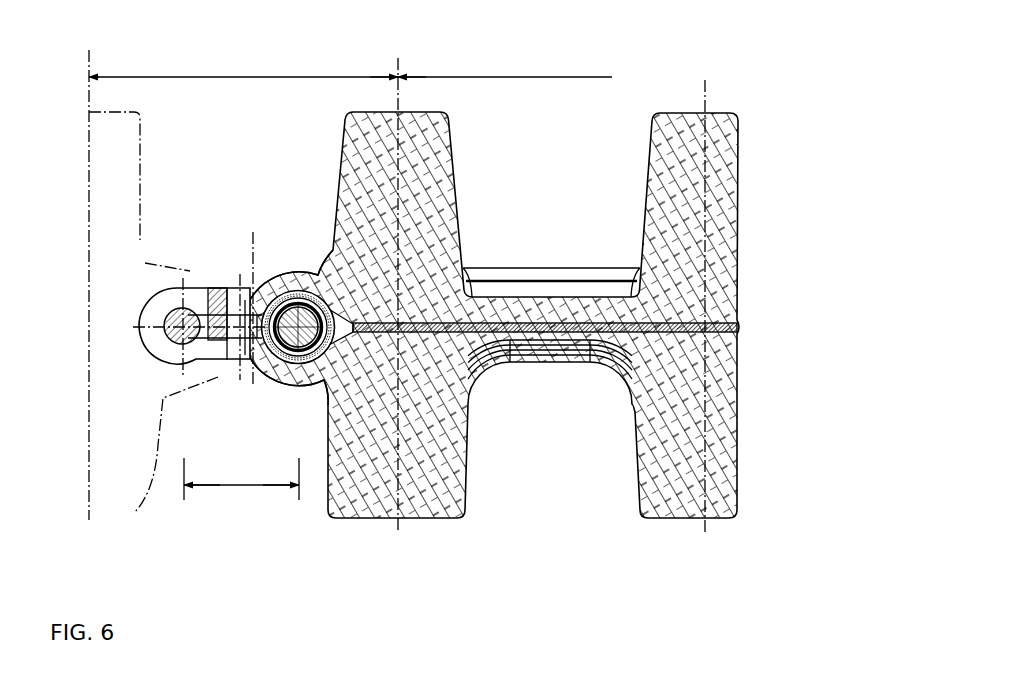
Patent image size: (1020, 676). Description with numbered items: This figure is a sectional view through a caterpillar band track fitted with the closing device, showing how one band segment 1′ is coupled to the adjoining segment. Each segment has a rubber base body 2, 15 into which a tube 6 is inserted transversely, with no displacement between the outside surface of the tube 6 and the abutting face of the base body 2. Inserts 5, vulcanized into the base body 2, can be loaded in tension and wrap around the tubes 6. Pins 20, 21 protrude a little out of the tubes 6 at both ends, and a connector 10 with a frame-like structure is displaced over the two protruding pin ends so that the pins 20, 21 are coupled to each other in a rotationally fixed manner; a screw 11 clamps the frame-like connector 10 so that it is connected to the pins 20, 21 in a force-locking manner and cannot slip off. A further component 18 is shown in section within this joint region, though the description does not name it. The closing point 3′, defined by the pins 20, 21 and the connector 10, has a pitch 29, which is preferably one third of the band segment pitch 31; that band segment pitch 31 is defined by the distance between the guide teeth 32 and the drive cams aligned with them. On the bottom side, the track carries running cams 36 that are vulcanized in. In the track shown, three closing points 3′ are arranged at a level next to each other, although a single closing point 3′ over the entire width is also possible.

The band segment 1′ is at (160, 456).
The rubber base body 2 is at (717, 280).
The closing point 3′ is at (272, 244).
The insert 5 is at (733, 348).
The tube 6 is at (266, 385).
The connector 10 is at (153, 297).
The screw 11 is at (243, 378).
The rubber base body 15 is at (530, 270).
The ball 18 is at (295, 372).
The pin 20 is at (260, 268).
The pin 21 is at (193, 300).
The pitch 29 is at (240, 487).
The band segment pitch 31 is at (240, 77).
The guide tooth 32 is at (453, 112).
The running cam 36 is at (635, 477).